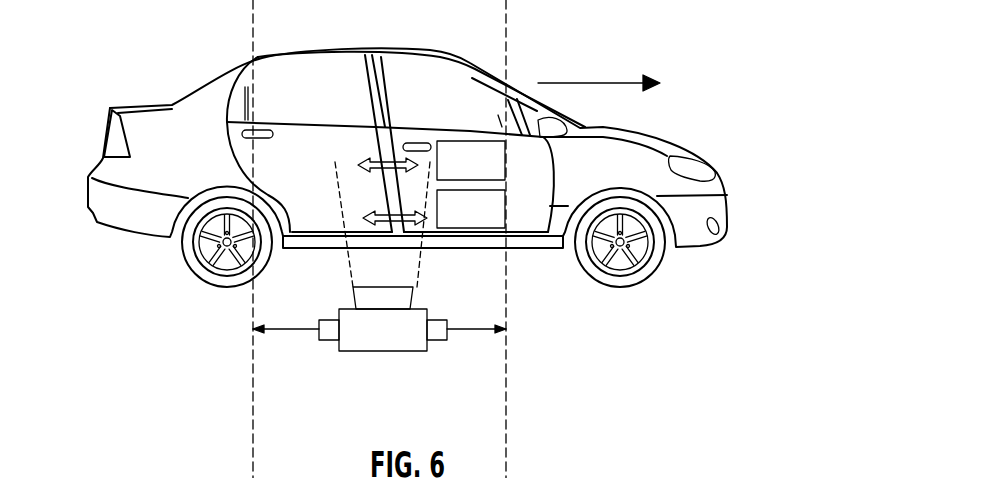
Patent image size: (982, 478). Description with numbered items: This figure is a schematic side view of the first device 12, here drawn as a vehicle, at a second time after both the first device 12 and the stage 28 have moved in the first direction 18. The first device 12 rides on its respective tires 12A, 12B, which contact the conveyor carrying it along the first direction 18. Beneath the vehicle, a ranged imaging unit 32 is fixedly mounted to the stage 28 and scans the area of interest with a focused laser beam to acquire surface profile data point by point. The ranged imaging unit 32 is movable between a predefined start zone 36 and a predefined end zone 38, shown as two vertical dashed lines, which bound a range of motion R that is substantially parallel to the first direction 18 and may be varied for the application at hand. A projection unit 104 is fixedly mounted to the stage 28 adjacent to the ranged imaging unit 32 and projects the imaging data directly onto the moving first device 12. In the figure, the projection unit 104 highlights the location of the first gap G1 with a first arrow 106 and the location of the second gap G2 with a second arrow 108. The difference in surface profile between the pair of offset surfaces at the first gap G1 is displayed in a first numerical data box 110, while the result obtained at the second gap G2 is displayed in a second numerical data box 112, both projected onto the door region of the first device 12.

The first device 12 is at (114, 94).
The tire 12A is at (640, 280).
The tire 12B is at (205, 280).
The first direction 18 is at (586, 83).
The stage 28 is at (435, 340).
The ranged imaging unit 32 is at (385, 352).
The predefined start zone 36 is at (251, 297).
The predefined end zone 38 is at (507, 283).
The range of motion R is at (310, 331).
The projection unit 104 is at (358, 287).
The first arrow 106 is at (358, 165).
The second arrow 108 is at (403, 233).
The first numerical data box 110 is at (492, 140).
The second numerical data box 112 is at (491, 229).
The first gap G1 is at (388, 160).
The second gap G2 is at (391, 210).